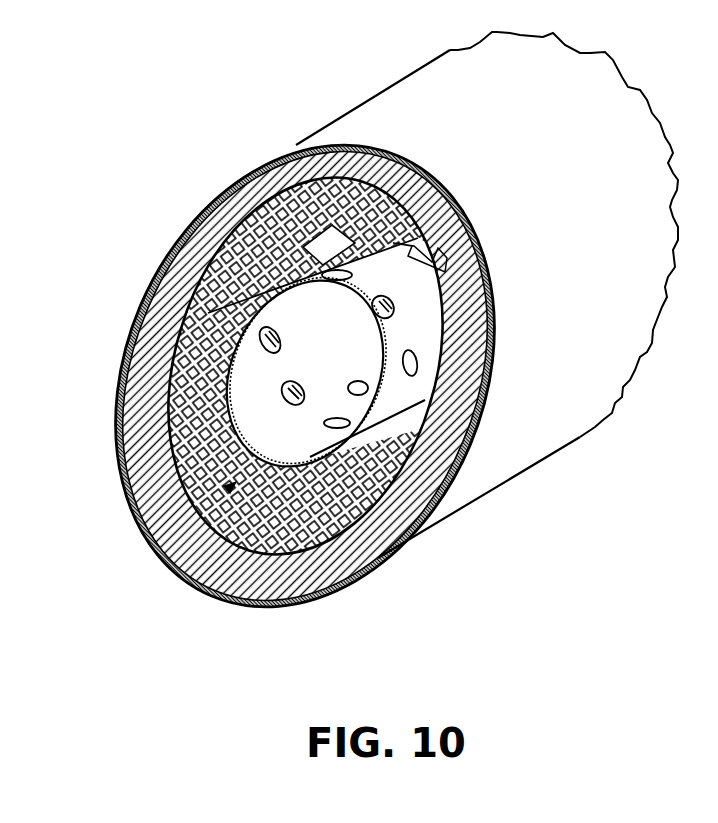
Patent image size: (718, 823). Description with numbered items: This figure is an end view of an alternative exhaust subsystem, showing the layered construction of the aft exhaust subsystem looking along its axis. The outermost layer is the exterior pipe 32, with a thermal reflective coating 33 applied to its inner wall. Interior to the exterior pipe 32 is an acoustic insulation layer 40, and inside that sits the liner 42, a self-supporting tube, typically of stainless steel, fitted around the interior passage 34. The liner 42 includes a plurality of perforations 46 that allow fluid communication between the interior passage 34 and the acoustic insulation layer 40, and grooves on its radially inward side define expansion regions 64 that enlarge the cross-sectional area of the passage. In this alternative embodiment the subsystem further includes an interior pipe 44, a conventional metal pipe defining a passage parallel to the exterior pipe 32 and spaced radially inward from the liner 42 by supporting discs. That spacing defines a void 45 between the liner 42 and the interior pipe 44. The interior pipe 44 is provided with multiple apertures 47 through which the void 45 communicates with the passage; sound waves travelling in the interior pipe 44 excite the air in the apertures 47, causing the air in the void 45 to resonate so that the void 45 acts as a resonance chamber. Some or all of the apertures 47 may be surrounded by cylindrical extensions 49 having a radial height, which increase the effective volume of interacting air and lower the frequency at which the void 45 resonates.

The acoustic insulation layer 40 is at (197, 268).
The exterior pipe 32 is at (437, 180).
The thermal reflective coating 33 is at (457, 231).
The perforations 46 is at (190, 375).
The interior pipe 44 is at (290, 328).
The expansion regions 64 is at (270, 203).
The extensions 49 is at (330, 252).
The interior passage 34 is at (268, 431).
The liner 42 is at (400, 456).
The apertures 47 is at (405, 363).
The void 45 is at (232, 485).